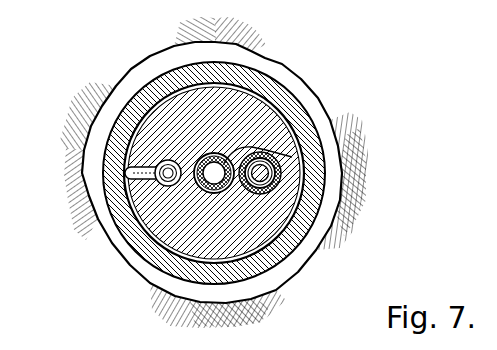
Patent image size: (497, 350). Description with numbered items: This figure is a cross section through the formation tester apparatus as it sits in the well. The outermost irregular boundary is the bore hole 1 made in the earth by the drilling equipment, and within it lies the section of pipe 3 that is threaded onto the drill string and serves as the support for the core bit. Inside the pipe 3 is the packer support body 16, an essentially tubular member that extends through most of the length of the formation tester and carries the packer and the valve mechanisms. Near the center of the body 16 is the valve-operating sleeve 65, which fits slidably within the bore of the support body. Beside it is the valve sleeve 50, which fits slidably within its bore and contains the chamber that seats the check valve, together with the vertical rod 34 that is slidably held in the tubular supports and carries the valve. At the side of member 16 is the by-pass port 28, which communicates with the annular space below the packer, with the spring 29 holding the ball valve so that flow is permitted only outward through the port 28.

The bore hole 1 is at (317, 85).
The section of pipe 3 is at (318, 158).
The packer support body 16 is at (268, 221).
The port 28 is at (126, 168).
The spring 29 is at (126, 190).
The vertical rod 34 is at (265, 173).
The valve sleeve 50 is at (272, 184).
The valve-operating sleeve 65 is at (245, 137).